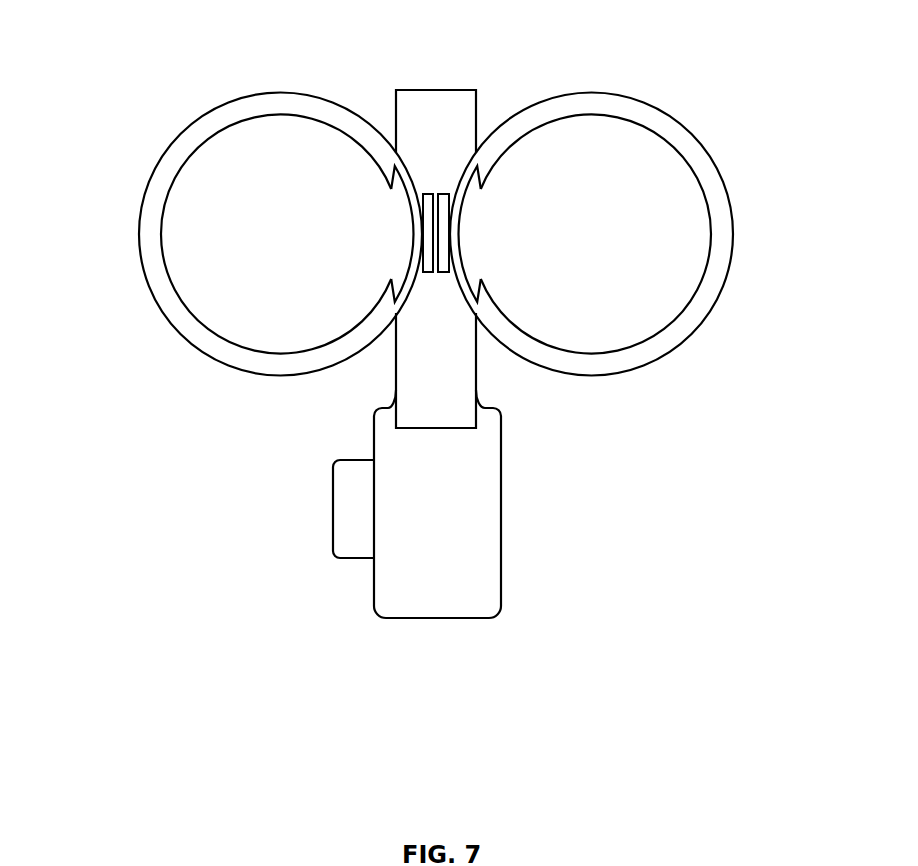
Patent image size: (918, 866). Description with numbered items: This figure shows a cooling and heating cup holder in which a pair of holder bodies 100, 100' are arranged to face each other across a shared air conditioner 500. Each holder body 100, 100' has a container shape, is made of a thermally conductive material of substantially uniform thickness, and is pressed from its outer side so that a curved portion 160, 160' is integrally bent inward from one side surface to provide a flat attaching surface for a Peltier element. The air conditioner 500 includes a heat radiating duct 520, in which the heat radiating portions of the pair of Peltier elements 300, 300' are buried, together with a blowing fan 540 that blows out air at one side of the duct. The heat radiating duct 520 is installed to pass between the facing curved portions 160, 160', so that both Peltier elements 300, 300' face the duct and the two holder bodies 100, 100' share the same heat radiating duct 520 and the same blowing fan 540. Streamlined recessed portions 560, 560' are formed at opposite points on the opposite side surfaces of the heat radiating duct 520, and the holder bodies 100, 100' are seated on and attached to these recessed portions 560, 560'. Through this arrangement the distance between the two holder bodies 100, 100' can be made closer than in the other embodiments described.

The holder body 100 is at (260, 225).
The holder body 100' is at (617, 225).
The curved portion 160 is at (219, 234).
The curved portion 160' is at (655, 234).
The Peltier element 300 is at (396, 142).
The Peltier element 300' is at (479, 142).
The air conditioner 500 is at (531, 639).
The heat radiating duct 520 is at (458, 383).
The blowing fan 540 is at (307, 517).
The recessed portion 560 is at (286, 309).
The recessed portion 560' is at (585, 303).